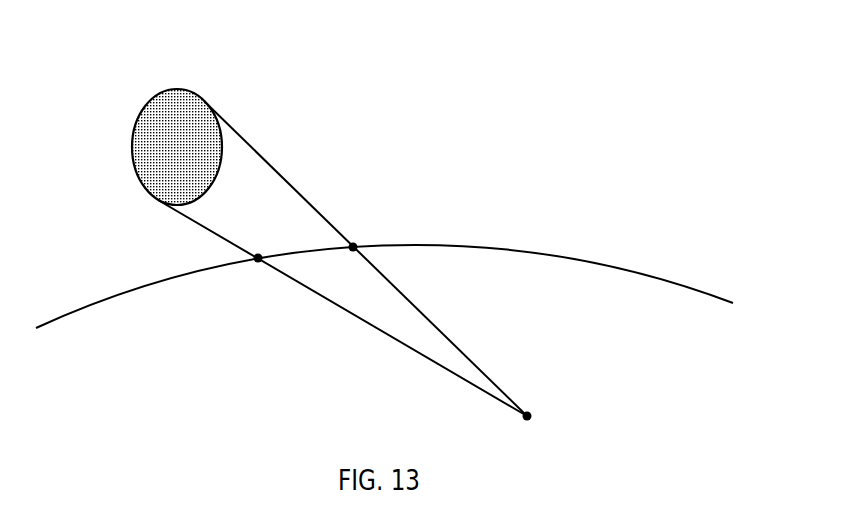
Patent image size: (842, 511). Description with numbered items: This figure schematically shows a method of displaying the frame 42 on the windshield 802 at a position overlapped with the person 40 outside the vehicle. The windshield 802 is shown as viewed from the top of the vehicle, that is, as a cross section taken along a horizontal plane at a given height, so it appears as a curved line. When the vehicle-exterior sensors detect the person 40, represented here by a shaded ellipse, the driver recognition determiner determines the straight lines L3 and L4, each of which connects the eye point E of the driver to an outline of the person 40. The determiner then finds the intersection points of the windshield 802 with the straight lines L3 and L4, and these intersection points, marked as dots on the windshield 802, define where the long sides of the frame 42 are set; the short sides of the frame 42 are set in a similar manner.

The person 40 is at (171, 98).
The frame 42 is at (257, 263).
The windshield 802 is at (587, 258).
The straight line L4 is at (283, 180).
The straight line L3 is at (380, 331).
The eye point E is at (533, 417).